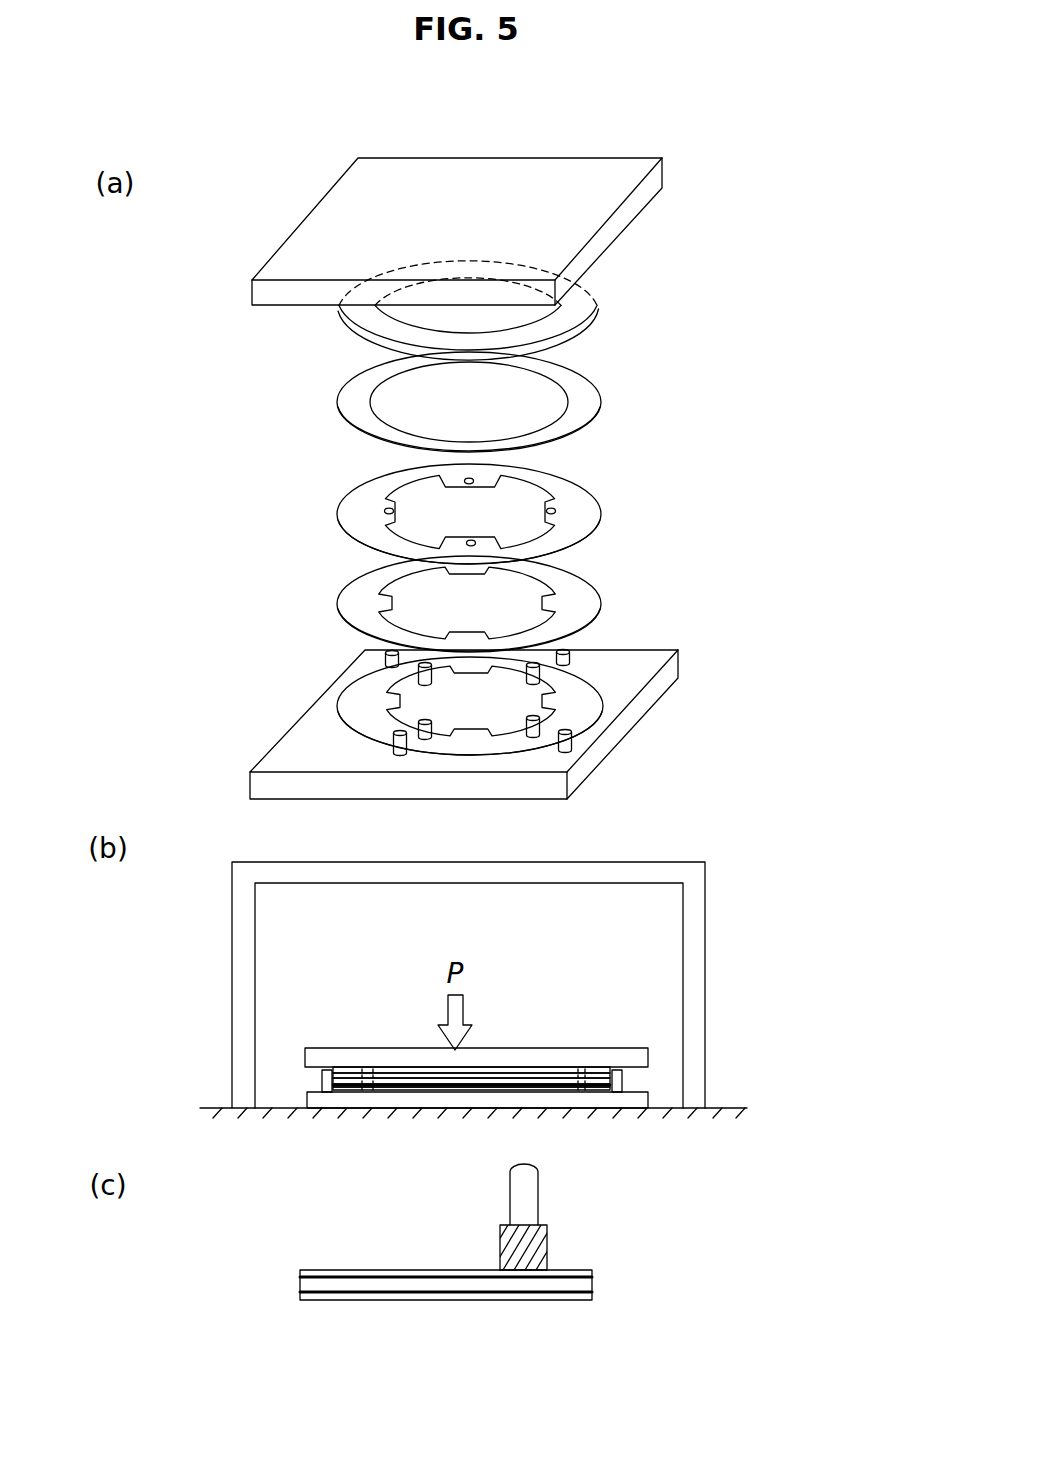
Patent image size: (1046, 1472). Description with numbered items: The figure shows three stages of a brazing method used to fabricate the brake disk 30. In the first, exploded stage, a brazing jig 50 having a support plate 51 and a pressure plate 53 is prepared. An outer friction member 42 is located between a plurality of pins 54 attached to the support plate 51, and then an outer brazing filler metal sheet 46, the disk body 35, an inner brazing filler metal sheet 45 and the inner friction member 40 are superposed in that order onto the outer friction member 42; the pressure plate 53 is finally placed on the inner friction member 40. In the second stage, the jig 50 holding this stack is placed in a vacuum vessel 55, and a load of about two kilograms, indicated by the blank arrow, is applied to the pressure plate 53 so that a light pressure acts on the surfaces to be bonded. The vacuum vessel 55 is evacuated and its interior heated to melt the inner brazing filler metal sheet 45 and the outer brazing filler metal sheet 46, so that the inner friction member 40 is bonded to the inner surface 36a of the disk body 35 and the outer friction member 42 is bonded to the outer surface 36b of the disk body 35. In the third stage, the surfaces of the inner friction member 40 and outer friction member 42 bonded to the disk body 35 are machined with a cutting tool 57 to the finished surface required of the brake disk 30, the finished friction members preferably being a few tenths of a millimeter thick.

The brake disk 30 is at (307, 1237).
The disk body 35 is at (401, 859).
The inner surface 36a is at (385, 485).
The outer surface 36b is at (357, 503).
The inner friction member 40 is at (345, 330).
The outer friction member 42 is at (362, 692).
The inner brazing filler metal sheet 45 is at (355, 398).
The outer brazing filler metal sheet 46 is at (358, 585).
The brazing jig 50 is at (782, 154).
The support plate 51 is at (632, 673).
The pressure plate 53 is at (627, 172).
The pins 54 is at (421, 724).
The vacuum vessel 55 is at (705, 897).
The cutting tool 57 is at (542, 1242).